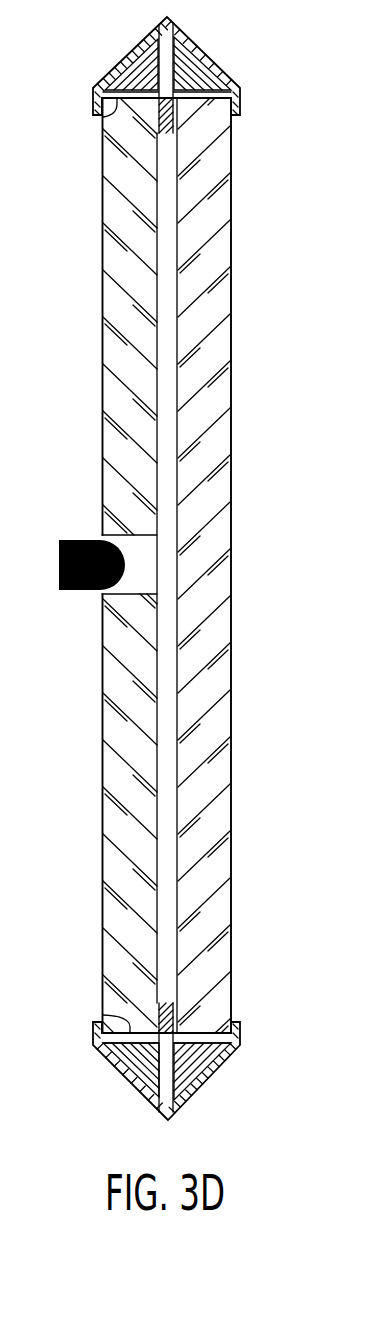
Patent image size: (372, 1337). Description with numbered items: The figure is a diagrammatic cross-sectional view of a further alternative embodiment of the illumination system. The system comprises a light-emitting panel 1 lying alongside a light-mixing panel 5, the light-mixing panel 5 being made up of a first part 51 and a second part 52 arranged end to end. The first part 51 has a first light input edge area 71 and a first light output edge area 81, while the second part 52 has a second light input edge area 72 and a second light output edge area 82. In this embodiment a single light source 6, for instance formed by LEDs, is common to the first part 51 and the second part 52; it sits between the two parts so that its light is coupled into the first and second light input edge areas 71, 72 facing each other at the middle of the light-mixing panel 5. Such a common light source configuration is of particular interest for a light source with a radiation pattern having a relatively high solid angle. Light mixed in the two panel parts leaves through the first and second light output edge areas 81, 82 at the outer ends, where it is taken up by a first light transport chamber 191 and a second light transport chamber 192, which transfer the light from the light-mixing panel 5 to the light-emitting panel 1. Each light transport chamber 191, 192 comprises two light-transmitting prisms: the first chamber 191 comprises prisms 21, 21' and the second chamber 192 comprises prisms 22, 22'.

The first light transport chamber 191 is at (77, 83).
The second light transport chamber 192 is at (110, 1093).
The light-transmitting prism 21 is at (129, 57).
The light-transmitting prism 21' is at (205, 55).
The light-transmitting prism 22 is at (113, 1076).
The light-transmitting prism 22' is at (208, 1078).
The first light output edge area 81 is at (110, 113).
The second light output edge area 82 is at (128, 1024).
The light-mixing panel 5 is at (92, 352).
The first part 51 is at (122, 245).
The second part 52 is at (120, 865).
The light-emitting panel 1 is at (215, 453).
The first light input edge area 71 is at (133, 533).
The second light input edge area 72 is at (130, 596).
The light source 6 is at (40, 573).